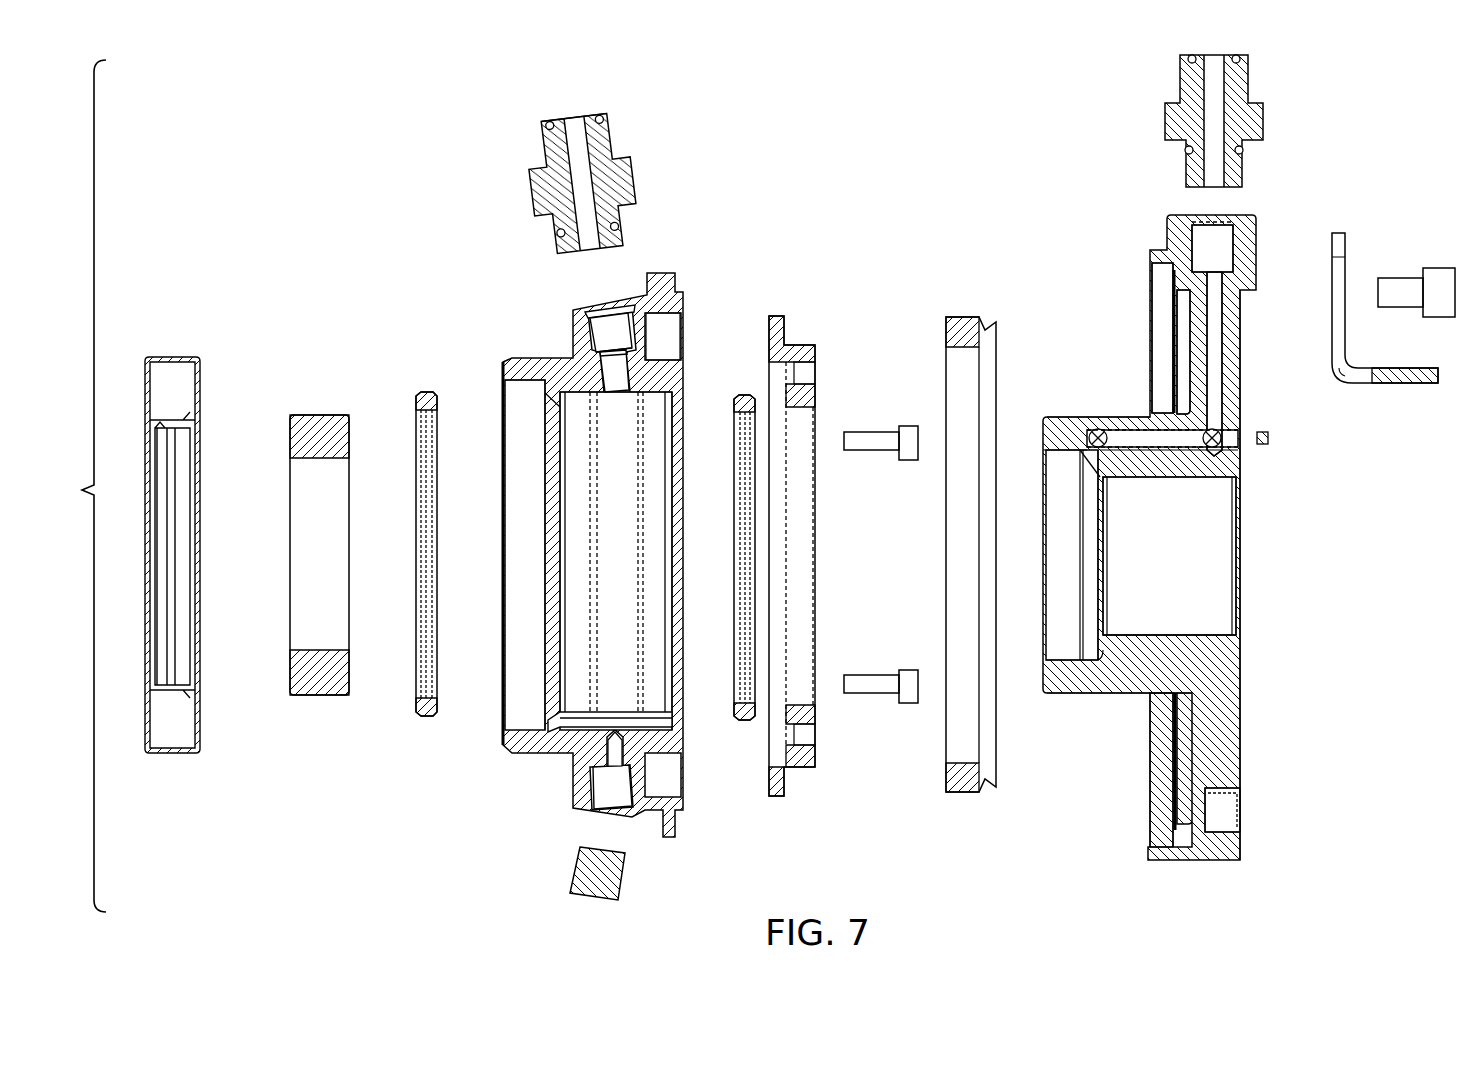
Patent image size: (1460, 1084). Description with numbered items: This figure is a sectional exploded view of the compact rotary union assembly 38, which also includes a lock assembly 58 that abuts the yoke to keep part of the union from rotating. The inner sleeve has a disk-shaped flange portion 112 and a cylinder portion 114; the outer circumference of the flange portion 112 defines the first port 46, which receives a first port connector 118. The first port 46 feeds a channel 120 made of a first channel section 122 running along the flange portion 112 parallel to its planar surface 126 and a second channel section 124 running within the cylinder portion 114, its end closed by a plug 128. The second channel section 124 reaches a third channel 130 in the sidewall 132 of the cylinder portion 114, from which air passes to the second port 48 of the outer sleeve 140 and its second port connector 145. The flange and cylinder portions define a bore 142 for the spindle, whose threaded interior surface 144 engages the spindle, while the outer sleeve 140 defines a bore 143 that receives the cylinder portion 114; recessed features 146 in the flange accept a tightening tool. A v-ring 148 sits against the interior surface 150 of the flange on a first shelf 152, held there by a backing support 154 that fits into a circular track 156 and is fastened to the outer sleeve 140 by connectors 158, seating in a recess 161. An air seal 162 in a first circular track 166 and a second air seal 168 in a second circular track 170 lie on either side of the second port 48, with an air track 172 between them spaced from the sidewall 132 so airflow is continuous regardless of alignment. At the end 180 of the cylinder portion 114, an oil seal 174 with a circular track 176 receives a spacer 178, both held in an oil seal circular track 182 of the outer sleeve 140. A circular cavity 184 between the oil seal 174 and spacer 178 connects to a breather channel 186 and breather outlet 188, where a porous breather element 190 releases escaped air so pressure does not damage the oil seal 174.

The compact rotary union assembly 38 is at (400, 265).
The first port 46 is at (1222, 222).
The second port 48 is at (588, 308).
The lock assembly 58 is at (1405, 400).
The flange portion 112 is at (1210, 878).
The cylinder portion 114 is at (1062, 712).
The first port connector 118 is at (1255, 118).
The channel 120 is at (1232, 362).
The first channel section 122 is at (1213, 330).
The second channel section 124 is at (1175, 450).
The planar surface 126 is at (1243, 692).
The plug 128 is at (1270, 440).
The third channel 130 is at (1098, 412).
The sidewall 132 is at (1060, 402).
The outer sleeve 140 is at (609, 529).
The bore 142 is at (1222, 565).
The bore 143 is at (692, 368).
The interior surface 144 is at (1166, 618).
The second port connector 145 is at (538, 192).
The recessed features 146 is at (1228, 805).
The v-ring 148 is at (963, 314).
The interior surface 150 is at (1178, 335).
The first shelf 152 is at (1178, 300).
The backing support 154 is at (802, 795).
The circular track 156 is at (1160, 786).
The connector 158 is at (880, 445).
The recess 161 is at (676, 325).
The air seal 162 is at (742, 398).
The first circular track 166 is at (655, 490).
The second air seal 168 is at (426, 718).
The second circular track 170 is at (580, 478).
The air track 172 is at (605, 693).
The oil seal 174 is at (183, 366).
The circular track 176 is at (165, 605).
The spacer 178 is at (322, 410).
The end 180 is at (1043, 665).
The oil seal circular track 182 is at (522, 405).
The circular cavity 184 is at (550, 630).
The breather channel 186 is at (655, 735).
The breather outlet 188 is at (603, 798).
The breather element 190 is at (610, 875).